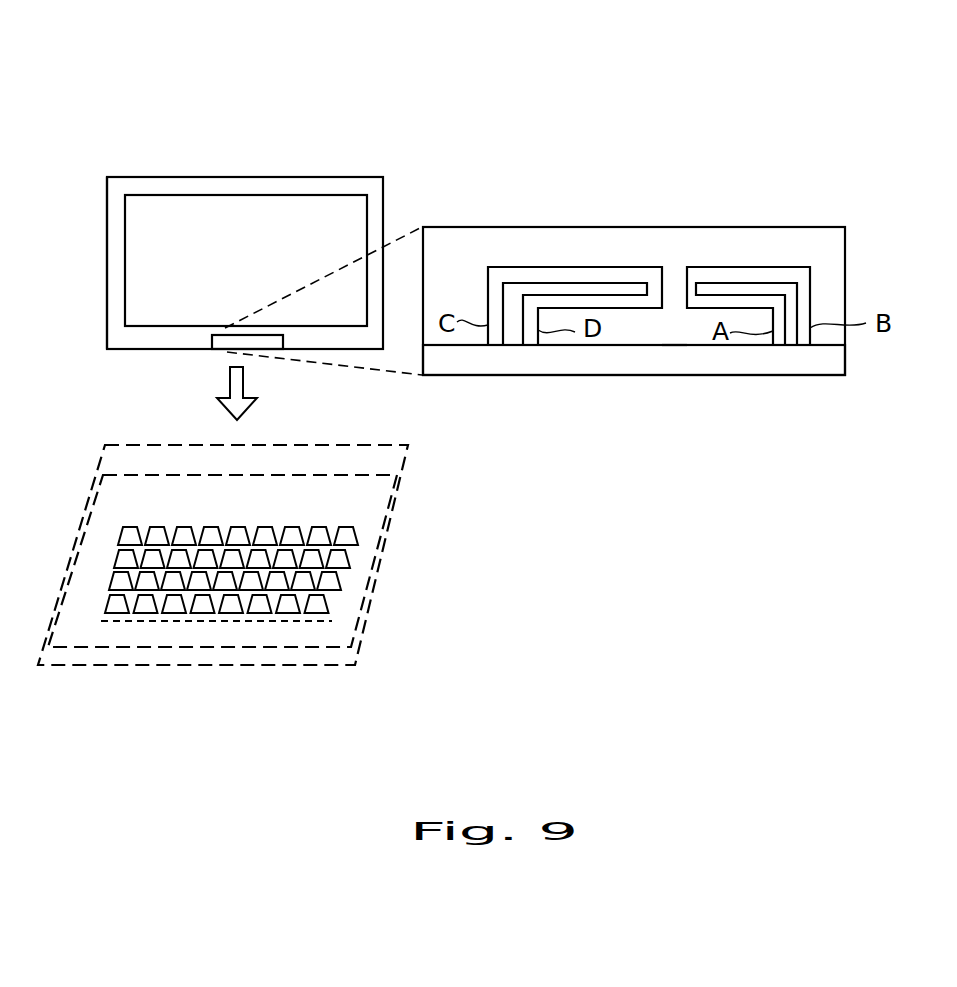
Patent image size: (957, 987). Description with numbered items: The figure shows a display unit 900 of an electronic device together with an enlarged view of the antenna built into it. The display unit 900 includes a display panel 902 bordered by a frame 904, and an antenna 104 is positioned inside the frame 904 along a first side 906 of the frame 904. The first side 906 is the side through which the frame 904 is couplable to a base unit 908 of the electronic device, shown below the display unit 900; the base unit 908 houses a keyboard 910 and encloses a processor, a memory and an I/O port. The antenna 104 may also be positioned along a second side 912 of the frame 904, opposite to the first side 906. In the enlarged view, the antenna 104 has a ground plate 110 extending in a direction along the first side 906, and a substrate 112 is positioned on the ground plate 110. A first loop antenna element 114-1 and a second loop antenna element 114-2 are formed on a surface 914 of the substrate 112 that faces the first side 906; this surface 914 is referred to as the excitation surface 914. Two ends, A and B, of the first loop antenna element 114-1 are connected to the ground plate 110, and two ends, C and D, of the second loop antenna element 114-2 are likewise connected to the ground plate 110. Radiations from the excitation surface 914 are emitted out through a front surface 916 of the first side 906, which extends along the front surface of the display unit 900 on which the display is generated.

The display unit 900 is at (192, 62).
The display panel 902 is at (265, 218).
The frame 904 is at (117, 253).
The first side 906 is at (172, 350).
The base unit 908 is at (373, 583).
The keyboard 910 is at (310, 567).
The second side 912 is at (183, 177).
The excitation surface 914 is at (667, 332).
The front surface 916 is at (158, 340).
The antenna 104 is at (212, 337).
The ground plate 110 is at (805, 375).
The substrate 112 is at (845, 227).
The first loop antenna element 114-1 is at (797, 267).
The second loop antenna element 114-2 is at (562, 267).